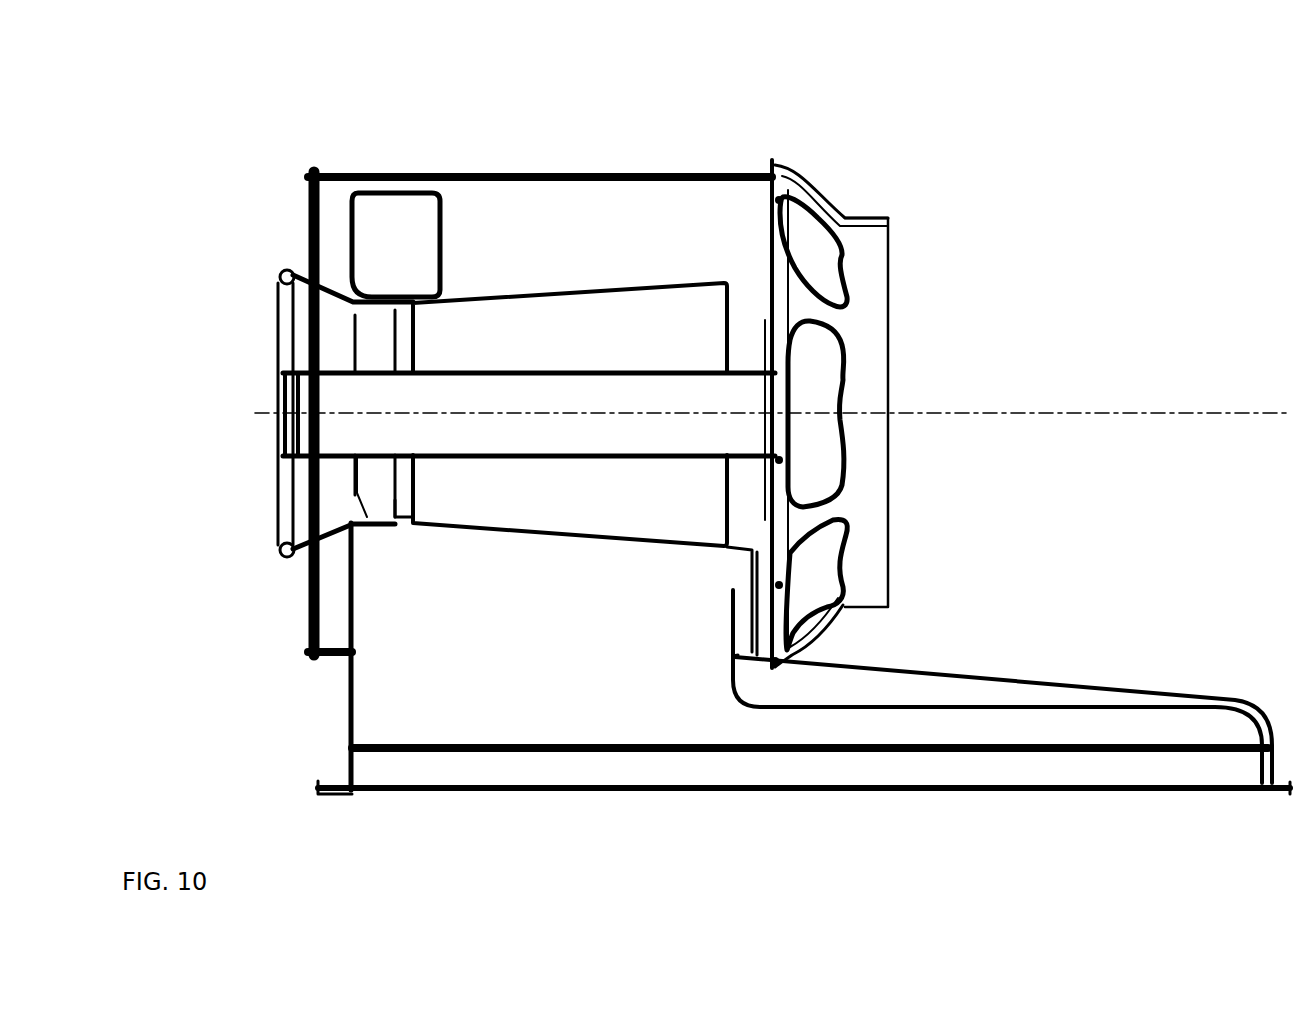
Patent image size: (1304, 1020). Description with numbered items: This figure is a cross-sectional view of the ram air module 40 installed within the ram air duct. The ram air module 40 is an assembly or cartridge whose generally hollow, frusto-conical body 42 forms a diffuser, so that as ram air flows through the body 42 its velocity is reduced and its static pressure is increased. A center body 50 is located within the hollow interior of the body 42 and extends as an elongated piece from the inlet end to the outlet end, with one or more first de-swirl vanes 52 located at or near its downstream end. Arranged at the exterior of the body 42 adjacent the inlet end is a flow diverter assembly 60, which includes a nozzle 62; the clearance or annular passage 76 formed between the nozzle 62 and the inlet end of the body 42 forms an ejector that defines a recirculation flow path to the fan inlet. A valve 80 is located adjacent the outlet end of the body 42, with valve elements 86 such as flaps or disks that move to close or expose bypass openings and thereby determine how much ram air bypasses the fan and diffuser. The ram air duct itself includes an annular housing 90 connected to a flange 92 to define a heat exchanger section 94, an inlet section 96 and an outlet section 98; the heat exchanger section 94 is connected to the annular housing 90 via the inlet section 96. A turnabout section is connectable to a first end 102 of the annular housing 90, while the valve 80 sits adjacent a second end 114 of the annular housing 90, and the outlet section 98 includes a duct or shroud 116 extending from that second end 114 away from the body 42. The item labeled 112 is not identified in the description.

The ram air module 40 is at (510, 257).
The body 42 is at (566, 290).
The center body 50 is at (485, 366).
The first de-swirl vanes 52 is at (743, 320).
The flow diverter assembly 60 is at (380, 215).
The nozzle 62 is at (317, 510).
The annular passage 76 is at (403, 485).
The valve 80 is at (845, 376).
The valve element 86 is at (818, 550).
The annular housing 90 is at (642, 172).
The flange 92 is at (1120, 690).
The heat exchanger section 94 is at (804, 771).
The inlet section 96 is at (416, 656).
The outlet section 98 is at (873, 313).
The first end 102 is at (313, 218).
The end panel 112 is at (277, 317).
The second end 114 is at (773, 160).
The shroud 116 is at (873, 216).